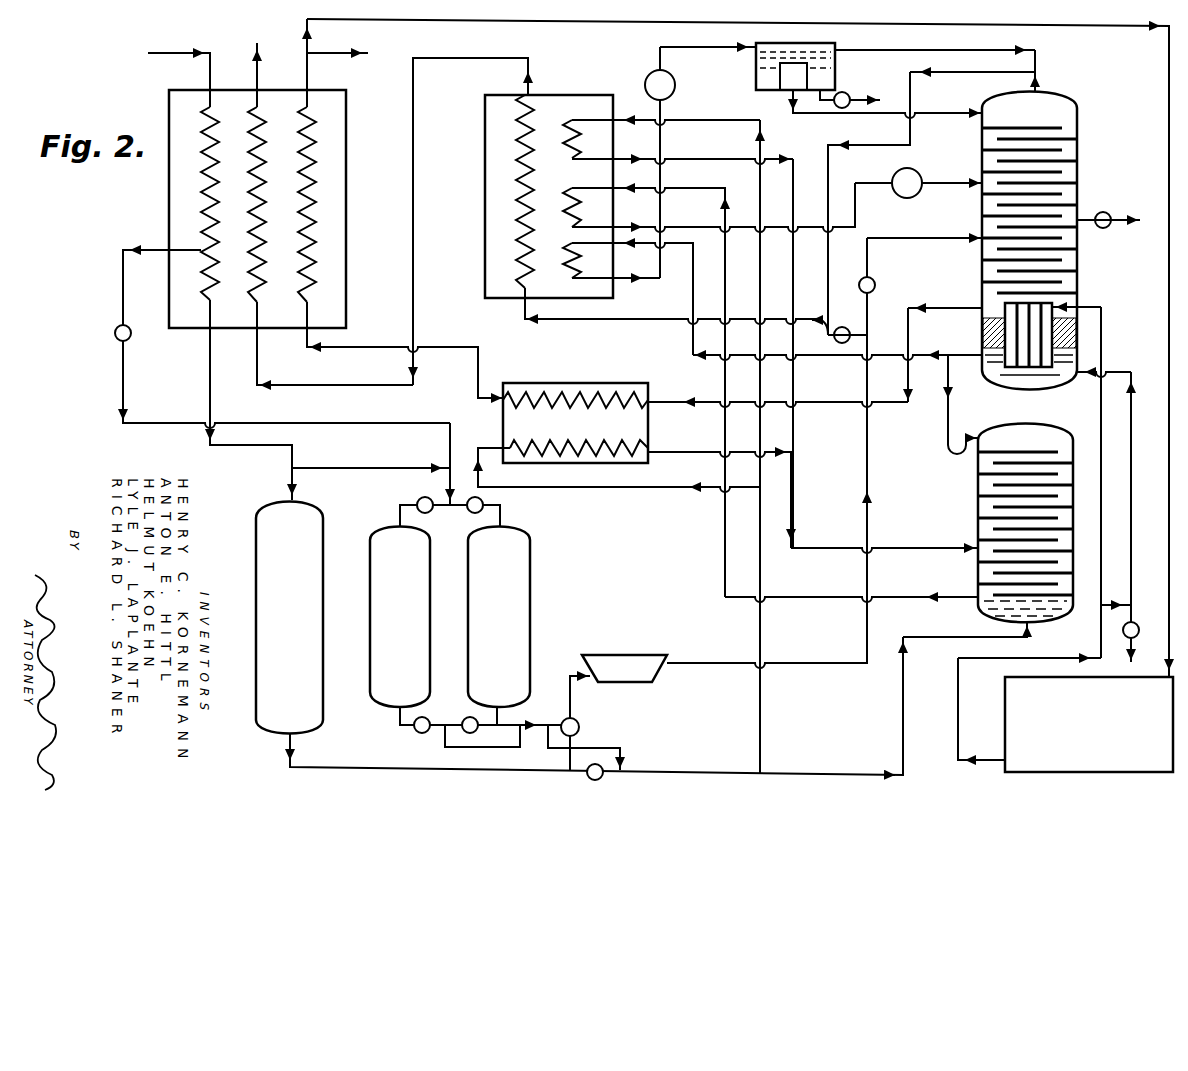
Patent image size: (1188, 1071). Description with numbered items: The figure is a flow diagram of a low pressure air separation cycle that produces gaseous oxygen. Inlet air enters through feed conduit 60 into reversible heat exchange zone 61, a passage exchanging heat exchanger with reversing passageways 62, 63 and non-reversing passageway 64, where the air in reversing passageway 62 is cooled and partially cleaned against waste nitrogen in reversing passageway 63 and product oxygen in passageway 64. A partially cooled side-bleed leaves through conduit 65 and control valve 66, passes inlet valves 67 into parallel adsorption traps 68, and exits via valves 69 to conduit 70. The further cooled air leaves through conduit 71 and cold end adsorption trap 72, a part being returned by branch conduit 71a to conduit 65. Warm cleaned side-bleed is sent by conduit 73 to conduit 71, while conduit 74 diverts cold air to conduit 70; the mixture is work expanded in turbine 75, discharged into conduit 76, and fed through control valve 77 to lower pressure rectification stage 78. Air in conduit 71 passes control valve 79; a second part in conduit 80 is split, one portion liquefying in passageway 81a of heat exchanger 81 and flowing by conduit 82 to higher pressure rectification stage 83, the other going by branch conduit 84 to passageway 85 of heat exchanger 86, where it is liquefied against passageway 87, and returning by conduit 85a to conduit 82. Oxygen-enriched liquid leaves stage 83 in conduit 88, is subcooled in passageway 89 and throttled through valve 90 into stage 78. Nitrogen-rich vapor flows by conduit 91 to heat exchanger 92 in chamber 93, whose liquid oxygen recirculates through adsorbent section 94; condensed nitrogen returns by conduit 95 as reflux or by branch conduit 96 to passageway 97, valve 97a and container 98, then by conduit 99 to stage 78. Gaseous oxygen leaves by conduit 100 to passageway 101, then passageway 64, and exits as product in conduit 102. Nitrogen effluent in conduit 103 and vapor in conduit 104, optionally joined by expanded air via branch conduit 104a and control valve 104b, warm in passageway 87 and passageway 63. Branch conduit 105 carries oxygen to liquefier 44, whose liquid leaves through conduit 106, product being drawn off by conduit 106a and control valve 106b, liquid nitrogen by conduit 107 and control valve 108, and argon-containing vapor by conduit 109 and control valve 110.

The liquefier 44 is at (1020, 692).
The feed conduit 60 is at (158, 52).
The reversible heat exchange zone 61 is at (169, 186).
The reversing passageway 62 is at (205, 212).
The reversing passageway 63 is at (255, 118).
The non-reversing passageway 64 is at (313, 154).
The conduit 65 is at (123, 271).
The control valve 66 is at (115, 334).
The inlet valves 67 is at (470, 513).
The adsorption traps 68 is at (478, 606).
The valves 69 is at (468, 717).
The conduit 70 is at (538, 720).
The conduit 71 is at (207, 371).
The branch conduit 71a is at (357, 470).
The cold end adsorption trap 72 is at (265, 540).
The conduit 73 is at (605, 748).
The conduit 74 is at (568, 759).
The turbine 75 is at (622, 655).
The conduit 76 is at (728, 661).
The control valve 77 is at (873, 282).
The lower pressure rectification stage 78 is at (982, 212).
The control valve 79 is at (604, 777).
The conduit 80 is at (758, 745).
The heat exchanger 81 is at (559, 383).
The passageway 81a is at (515, 447).
The conduit 82 is at (791, 505).
The higher pressure rectification stage 83 is at (978, 508).
The branch conduit 84 is at (755, 447).
The passageway 85 is at (572, 118).
The conduit 85a is at (698, 159).
The heat exchanger 86 is at (485, 153).
The passageway 87 is at (520, 195).
The conduit 88 is at (943, 596).
The passageway 89 is at (575, 197).
The valve 90 is at (895, 175).
The conduit 91 is at (1101, 400).
The heat exchanger 92 is at (1050, 300).
The chamber 93 is at (1006, 382).
The adsorbent section 94 is at (982, 328).
The conduit 95 is at (955, 357).
The branch conduit 96 is at (887, 360).
The passageway 97 is at (572, 262).
The valve 97a is at (647, 78).
The container 98 is at (756, 80).
The conduit 99 is at (803, 115).
The conduit 100 is at (943, 307).
The passageway 101 is at (607, 396).
The conduit 102 is at (338, 56).
The conduit 103 is at (259, 80).
The conduit 104 is at (1015, 50).
The branch conduit 104a is at (858, 333).
The control valve 104b is at (836, 341).
The branch conduit 105 is at (391, 22).
The conduit 106 is at (958, 745).
The conduit 106a is at (1128, 648).
The control valve 106b is at (1123, 632).
The conduit 107 is at (858, 100).
The control valve 108 is at (845, 91).
The conduit 109 is at (1094, 210).
The control valve 110 is at (1108, 239).